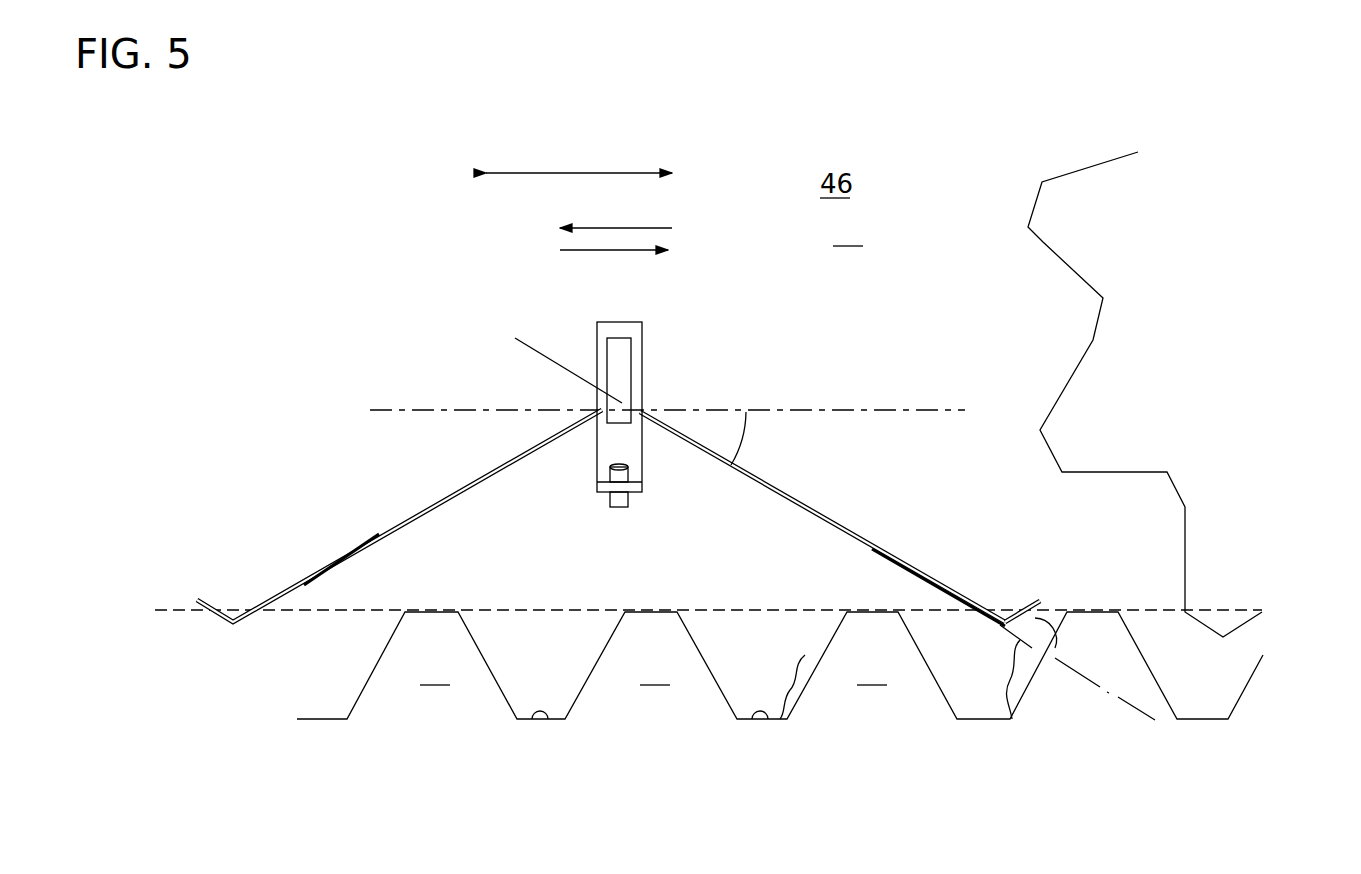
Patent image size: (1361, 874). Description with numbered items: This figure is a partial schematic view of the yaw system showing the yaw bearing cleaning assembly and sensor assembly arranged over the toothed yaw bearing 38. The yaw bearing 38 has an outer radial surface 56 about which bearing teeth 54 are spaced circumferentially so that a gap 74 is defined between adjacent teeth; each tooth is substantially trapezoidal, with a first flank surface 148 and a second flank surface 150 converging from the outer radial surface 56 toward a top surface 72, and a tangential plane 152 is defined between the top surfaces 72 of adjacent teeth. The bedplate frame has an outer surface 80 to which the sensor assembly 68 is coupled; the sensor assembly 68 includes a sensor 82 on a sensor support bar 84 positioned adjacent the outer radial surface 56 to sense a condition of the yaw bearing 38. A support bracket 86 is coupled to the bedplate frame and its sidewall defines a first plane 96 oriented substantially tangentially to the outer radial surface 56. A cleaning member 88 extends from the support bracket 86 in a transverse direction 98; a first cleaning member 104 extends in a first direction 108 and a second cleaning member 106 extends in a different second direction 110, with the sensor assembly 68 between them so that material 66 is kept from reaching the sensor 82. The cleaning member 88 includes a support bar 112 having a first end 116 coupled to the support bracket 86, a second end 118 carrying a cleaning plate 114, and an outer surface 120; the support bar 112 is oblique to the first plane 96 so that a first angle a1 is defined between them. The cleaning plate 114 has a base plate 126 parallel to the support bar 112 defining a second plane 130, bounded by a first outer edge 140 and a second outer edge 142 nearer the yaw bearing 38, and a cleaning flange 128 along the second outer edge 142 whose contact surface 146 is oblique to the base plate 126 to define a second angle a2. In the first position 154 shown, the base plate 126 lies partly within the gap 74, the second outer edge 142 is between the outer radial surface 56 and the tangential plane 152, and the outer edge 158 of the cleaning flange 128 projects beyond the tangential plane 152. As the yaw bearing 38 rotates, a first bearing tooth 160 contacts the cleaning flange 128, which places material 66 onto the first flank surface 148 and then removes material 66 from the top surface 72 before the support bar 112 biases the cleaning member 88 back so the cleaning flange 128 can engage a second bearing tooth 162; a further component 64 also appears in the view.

The yaw bearing 38 is at (618, 516).
The bearing teeth 54 is at (780, 665).
The outer radial surface 56 is at (540, 719).
The upper die 64 is at (1043, 242).
The material 66 is at (805, 655).
The sensor assembly 68 is at (588, 488).
The top surface 72 is at (668, 610).
The gap 74 is at (528, 672).
The outer surface 80 is at (690, 389).
The sensor 82 is at (628, 505).
The sensor support bar 84 is at (642, 468).
The support bracket 86 is at (632, 358).
The cleaning member 88 is at (980, 505).
The first plane 96 is at (960, 410).
The transverse direction 98 is at (637, 173).
The first cleaning member 104 is at (820, 435).
The second cleaning member 106 is at (470, 472).
The first direction 108 is at (572, 250).
The second direction 110 is at (597, 228).
The support bar 112 is at (838, 527).
The cleaning plate 114 is at (965, 555).
The first end 116 is at (640, 412).
The second end 118 is at (907, 568).
The outer surface 120 is at (796, 504).
The base plate 126 is at (978, 606).
The cleaning flange 128 is at (1010, 606).
The second plane 130 is at (1135, 706).
The first outer edge 140 is at (870, 543).
The second outer edge 142 is at (985, 620).
The contact surface 146 is at (1040, 612).
The first flank surface 148 is at (602, 654).
The second flank surface 150 is at (474, 641).
The tangential plane 152 is at (768, 608).
The first position 154 is at (905, 470).
The outer edge 158 is at (1033, 605).
The first bearing tooth 160 is at (913, 640).
The second bearing tooth 162 is at (1003, 704).
The angle α1 a1 is at (746, 443).
The angle α2 a2 is at (1056, 640).